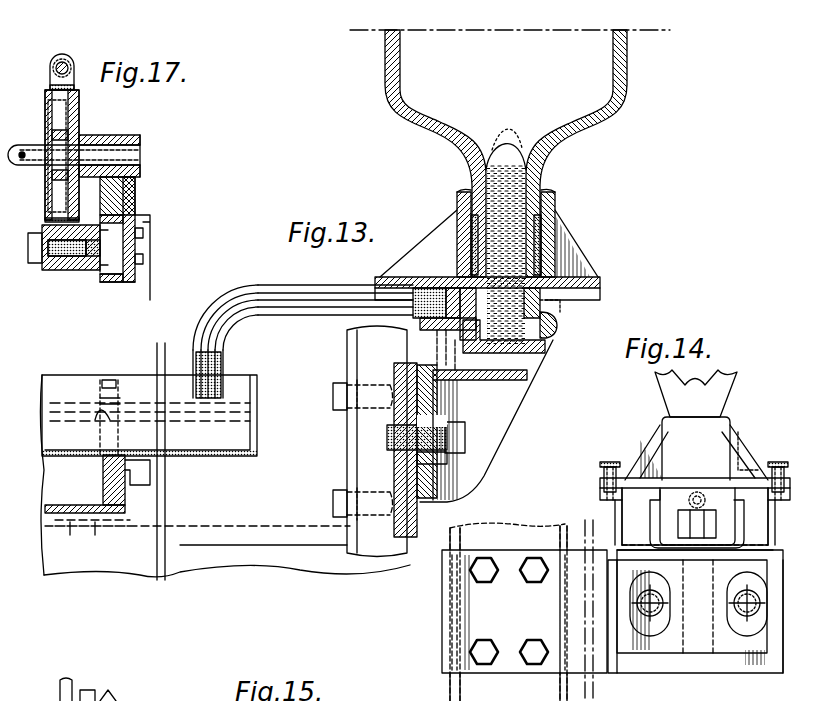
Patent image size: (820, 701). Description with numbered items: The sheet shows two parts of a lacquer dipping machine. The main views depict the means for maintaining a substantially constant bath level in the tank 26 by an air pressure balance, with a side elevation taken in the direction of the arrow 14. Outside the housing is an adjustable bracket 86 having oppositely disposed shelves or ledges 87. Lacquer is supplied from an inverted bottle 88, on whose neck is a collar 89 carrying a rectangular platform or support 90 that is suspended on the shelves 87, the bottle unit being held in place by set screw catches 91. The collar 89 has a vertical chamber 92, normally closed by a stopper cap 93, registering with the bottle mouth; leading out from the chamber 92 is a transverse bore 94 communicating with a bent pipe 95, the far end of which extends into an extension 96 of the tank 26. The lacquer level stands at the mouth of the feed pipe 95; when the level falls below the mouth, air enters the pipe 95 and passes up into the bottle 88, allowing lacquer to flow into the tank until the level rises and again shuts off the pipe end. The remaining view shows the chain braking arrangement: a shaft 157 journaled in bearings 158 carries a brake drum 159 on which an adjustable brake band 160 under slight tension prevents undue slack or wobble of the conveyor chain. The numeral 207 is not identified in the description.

In FIG. 13, the arrow 14 is at (582, 401).
In FIG. 13, the tank 26 is at (225, 461).
In FIG. 13, the adjustable bracket 86 is at (472, 474).
In FIG. 14, the adjustable bracket 86 is at (675, 643).
In FIG. 13, the shelves 87 is at (600, 283).
In FIG. 14, the shelves 87 is at (612, 500).
In FIG. 13, the inverted bottle 88 is at (628, 88).
In FIG. 13, the collar 89 is at (556, 205).
In FIG. 13, the platform 90 is at (592, 275).
In FIG. 14, the platform 90 is at (715, 478).
In FIG. 14, the set screw catches 91 is at (693, 469).
In FIG. 13, the vertical chamber 92 is at (545, 320).
In FIG. 13, the cap 93 is at (546, 348).
In FIG. 13, the transverse bore 94 is at (452, 325).
In FIG. 13, the bent pipe 95 is at (300, 296).
In FIG. 13, the extension 96 is at (252, 452).
In FIG. 17, the shaft 157 is at (35, 152).
In FIG. 17, the bearings 158 is at (140, 148).
In FIG. 17, the brake drum 159 is at (79, 105).
In FIG. 17, the adjustable brake band 160 is at (76, 62).
In FIG. 14, the spout 207 is at (722, 400).